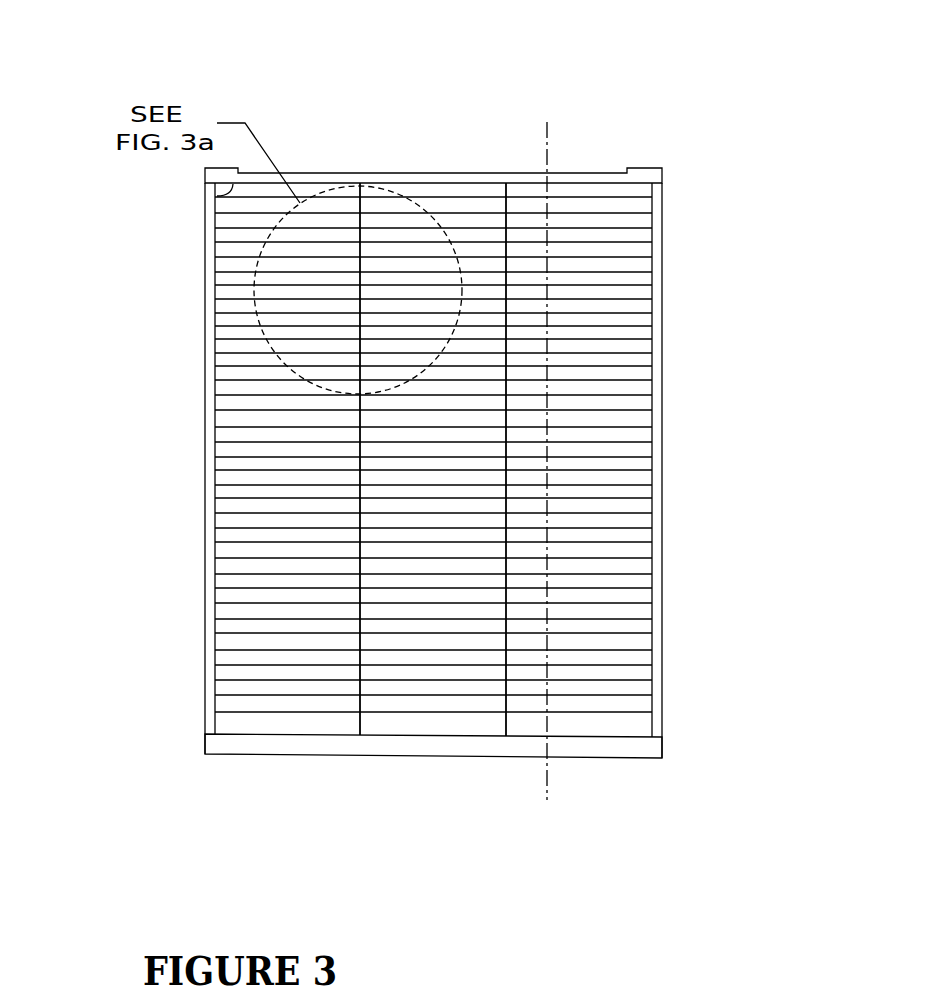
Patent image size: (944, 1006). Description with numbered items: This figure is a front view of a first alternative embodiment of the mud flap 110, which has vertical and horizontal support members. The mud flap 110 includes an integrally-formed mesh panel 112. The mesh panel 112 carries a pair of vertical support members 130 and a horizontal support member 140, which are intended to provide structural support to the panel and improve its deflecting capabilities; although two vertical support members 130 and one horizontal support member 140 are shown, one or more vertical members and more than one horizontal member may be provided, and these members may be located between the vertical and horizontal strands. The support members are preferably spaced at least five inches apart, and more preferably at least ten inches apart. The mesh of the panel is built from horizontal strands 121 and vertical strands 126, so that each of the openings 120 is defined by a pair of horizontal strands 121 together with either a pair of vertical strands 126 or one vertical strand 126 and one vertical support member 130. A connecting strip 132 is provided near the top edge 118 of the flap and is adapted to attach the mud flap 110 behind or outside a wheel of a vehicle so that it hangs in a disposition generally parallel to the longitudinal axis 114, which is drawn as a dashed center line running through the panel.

The mud flap 110 is at (484, 124).
The mesh panel 112 is at (189, 537).
The longitudinal axis 114 is at (554, 766).
The top edge 118 is at (215, 200).
The openings 120 is at (634, 292).
The horizontal strands 121 is at (574, 188).
The vertical strands 126 is at (358, 733).
The vertical support members 130 is at (204, 301).
The connecting strip 132 is at (645, 181).
The horizontal support member 140 is at (643, 750).